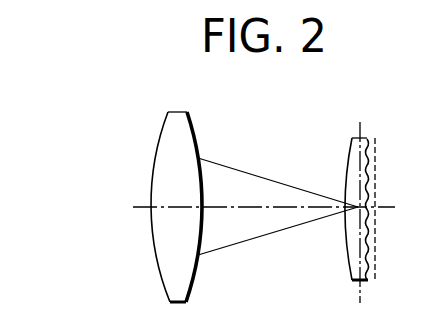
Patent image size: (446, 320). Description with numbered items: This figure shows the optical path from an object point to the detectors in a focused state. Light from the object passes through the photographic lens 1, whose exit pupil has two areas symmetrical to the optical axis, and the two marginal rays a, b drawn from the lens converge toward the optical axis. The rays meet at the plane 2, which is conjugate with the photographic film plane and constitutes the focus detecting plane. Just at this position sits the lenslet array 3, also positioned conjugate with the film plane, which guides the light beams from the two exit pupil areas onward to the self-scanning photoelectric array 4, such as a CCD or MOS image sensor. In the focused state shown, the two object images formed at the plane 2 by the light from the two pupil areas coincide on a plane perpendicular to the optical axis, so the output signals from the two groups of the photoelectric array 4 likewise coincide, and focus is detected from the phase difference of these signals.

The photographic lens 1 is at (162, 283).
The plane conjugate with the photographic film plane 2 is at (362, 292).
The lenslet array 3 is at (352, 140).
The self-scanning photoelectric array 4 is at (375, 141).
The upper marginal ray a is at (260, 177).
The lower marginal ray b is at (265, 235).